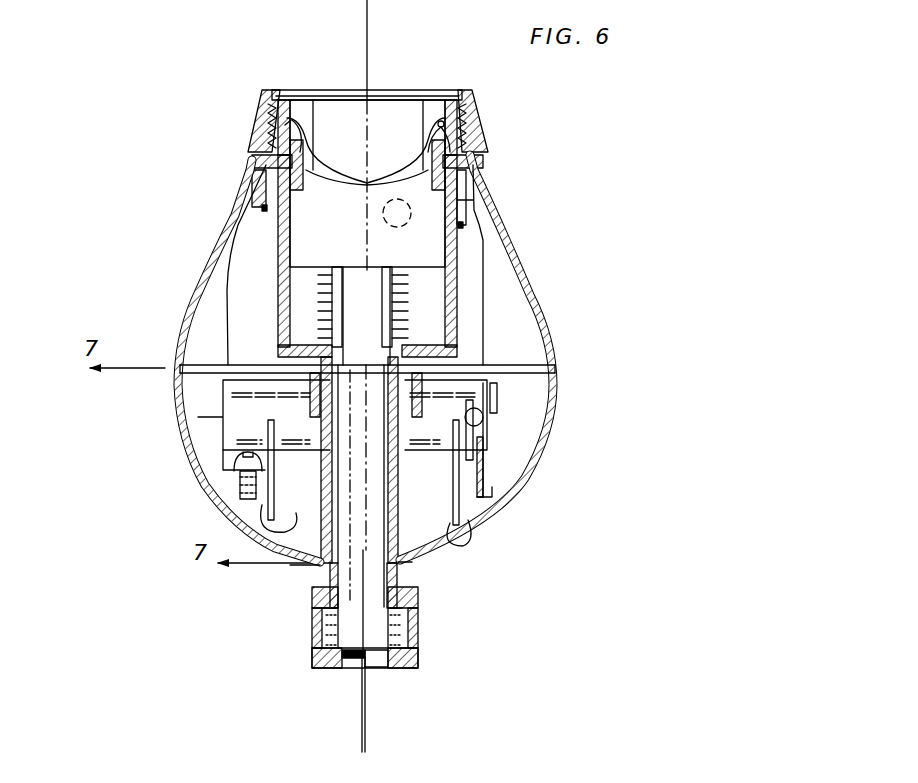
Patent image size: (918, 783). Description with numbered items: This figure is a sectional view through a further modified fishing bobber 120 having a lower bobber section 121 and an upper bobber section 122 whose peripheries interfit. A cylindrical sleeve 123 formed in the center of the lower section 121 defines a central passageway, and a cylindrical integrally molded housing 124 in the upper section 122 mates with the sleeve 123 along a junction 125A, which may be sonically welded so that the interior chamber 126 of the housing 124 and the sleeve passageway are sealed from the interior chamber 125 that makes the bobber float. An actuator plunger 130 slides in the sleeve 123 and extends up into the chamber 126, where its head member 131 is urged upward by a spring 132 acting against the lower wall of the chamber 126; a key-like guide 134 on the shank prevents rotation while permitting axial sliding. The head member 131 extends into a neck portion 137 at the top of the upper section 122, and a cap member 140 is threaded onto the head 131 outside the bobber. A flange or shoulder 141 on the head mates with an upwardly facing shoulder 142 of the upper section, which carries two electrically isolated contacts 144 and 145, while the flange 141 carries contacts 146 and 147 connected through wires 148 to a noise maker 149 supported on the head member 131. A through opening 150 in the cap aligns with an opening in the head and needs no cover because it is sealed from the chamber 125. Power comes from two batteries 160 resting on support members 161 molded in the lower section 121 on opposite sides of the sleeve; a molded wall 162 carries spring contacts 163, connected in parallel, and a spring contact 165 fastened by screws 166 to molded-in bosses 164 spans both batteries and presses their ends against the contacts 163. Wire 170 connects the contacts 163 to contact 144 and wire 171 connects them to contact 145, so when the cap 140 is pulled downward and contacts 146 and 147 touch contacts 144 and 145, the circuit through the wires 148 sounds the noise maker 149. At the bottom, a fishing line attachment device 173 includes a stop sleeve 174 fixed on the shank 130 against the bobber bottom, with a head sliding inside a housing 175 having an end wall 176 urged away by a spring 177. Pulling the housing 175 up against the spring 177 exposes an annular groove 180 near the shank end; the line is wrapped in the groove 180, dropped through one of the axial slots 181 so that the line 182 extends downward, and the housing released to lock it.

The bobber 120 is at (197, 229).
The lower bobber section 121 is at (180, 400).
The upper bobber section 122 is at (230, 222).
The cylindrical sleeve 123 is at (407, 465).
The housing 124 is at (477, 260).
The interior chamber 125 is at (523, 392).
The junction 125A is at (302, 347).
The interior chamber of the housing 126 is at (427, 323).
The actuator plunger 130 is at (357, 572).
The head member 131 is at (288, 283).
The spring 132 is at (432, 283).
The guide 134 is at (346, 285).
The neck portion 137 is at (268, 158).
The cap member 140 is at (253, 113).
The flange or shoulder 141 is at (287, 152).
The shoulder or flange 142 is at (483, 162).
The contact 144 is at (478, 205).
The contact 145 is at (262, 203).
The contact 146 is at (470, 138).
The contact 147 is at (283, 118).
The wires 148 is at (377, 180).
The noise maker 149 is at (392, 105).
The through opening 150 is at (425, 92).
The batteries 160 is at (300, 440).
The support members 161 is at (262, 525).
The wall 162 is at (485, 490).
The spring contacts 163 is at (483, 408).
The bosses 164 is at (238, 484).
The spring contact 165 is at (227, 457).
The screws 166 is at (235, 461).
The wire 170 is at (483, 293).
The wire 171 is at (227, 297).
The fishing line attachment device 173 is at (302, 650).
The sleeve 174 is at (430, 575).
The housing 175 is at (420, 606).
The end wall 176 is at (323, 670).
The spring 177 is at (335, 628).
The annular groove 180 is at (383, 665).
The axial slots 181 is at (362, 673).
The line 182 is at (367, 738).